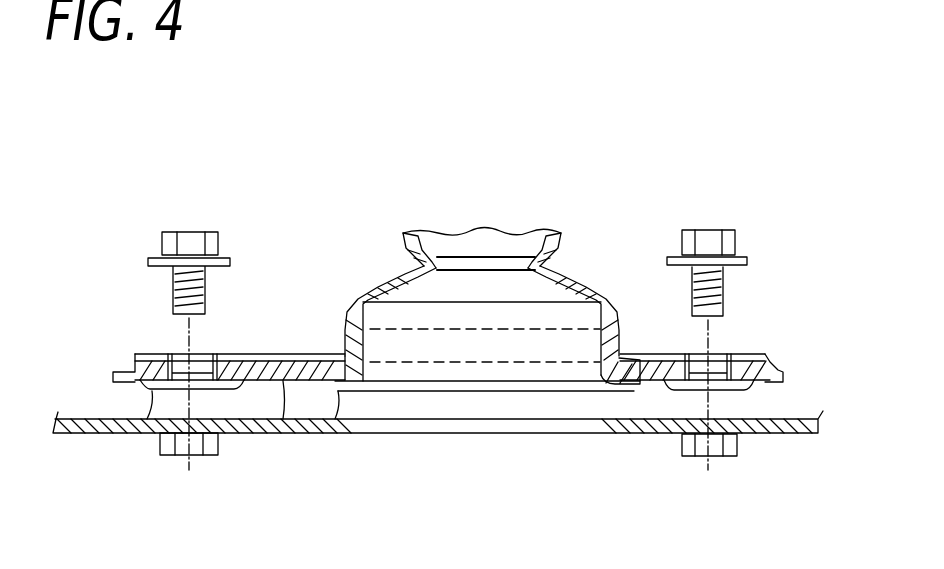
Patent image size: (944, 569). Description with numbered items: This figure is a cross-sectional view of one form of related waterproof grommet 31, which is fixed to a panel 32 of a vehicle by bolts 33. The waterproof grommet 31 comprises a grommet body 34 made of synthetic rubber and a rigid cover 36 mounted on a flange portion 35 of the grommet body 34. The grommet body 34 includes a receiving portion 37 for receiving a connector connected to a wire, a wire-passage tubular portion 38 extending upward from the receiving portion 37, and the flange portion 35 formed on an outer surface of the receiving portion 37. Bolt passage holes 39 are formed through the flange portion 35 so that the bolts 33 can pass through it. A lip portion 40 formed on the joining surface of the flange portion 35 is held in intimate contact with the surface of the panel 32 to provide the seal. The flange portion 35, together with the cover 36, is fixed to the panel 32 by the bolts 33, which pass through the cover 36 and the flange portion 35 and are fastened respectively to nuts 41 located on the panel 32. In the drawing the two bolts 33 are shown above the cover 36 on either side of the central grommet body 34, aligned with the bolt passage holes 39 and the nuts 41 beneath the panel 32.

The waterproof grommet 31 is at (465, 296).
The panel 32 is at (789, 436).
The bolts 33 is at (735, 240).
The grommet body 34 is at (353, 293).
The flange portion 35 is at (278, 433).
The cover 36 is at (270, 354).
The receiving portion 37 is at (363, 323).
The wire-passage tubular portion 38 is at (557, 235).
The bolt passage holes 39 is at (180, 354).
The lip portion 40 is at (145, 428).
The nuts 41 is at (729, 457).